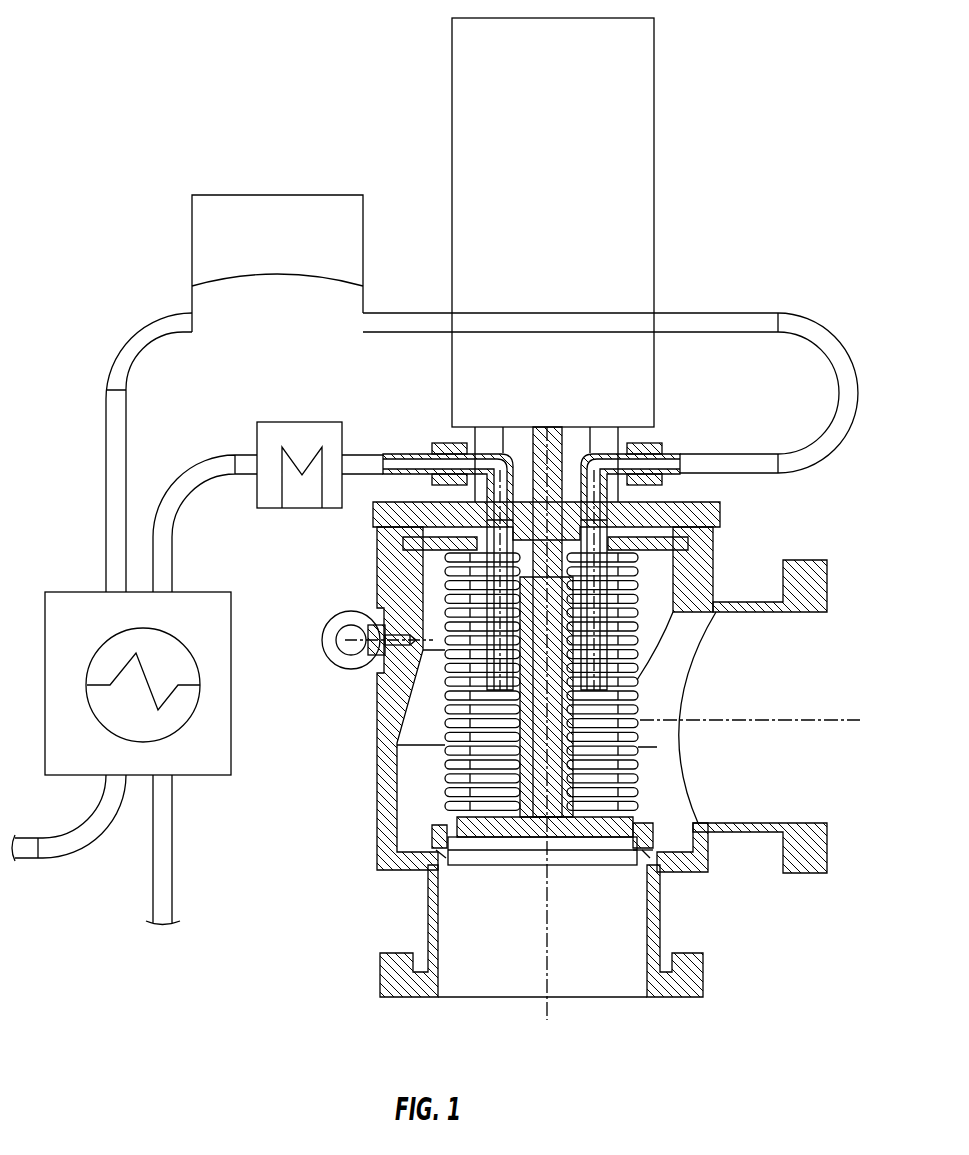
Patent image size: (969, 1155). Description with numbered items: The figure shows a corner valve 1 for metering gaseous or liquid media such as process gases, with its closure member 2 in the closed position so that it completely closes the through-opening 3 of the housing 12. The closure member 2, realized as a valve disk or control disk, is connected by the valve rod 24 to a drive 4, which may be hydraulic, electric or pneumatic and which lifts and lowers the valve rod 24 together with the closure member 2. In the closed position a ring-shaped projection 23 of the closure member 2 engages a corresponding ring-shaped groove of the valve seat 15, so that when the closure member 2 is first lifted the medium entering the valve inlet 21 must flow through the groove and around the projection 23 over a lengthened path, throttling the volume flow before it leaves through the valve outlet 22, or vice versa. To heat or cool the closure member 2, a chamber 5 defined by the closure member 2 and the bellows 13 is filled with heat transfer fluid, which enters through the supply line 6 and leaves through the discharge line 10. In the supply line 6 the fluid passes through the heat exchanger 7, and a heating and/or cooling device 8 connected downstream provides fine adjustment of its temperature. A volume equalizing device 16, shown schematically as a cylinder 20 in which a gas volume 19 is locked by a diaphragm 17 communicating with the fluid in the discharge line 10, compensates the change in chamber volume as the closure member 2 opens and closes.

The valve 1 is at (358, 862).
The closure member 2 is at (515, 832).
The through-opening 3 is at (532, 860).
The drive 4 is at (640, 199).
The chamber 5 is at (623, 690).
The supply line 6 is at (383, 443).
The heat exchanger 7 is at (200, 760).
The heating and/or cooling device 8 is at (331, 436).
The discharge line 10 is at (682, 318).
The housing 12 is at (652, 857).
The bellows 13 is at (635, 563).
The valve seat 15 is at (430, 858).
The volume equalizing device 16 is at (335, 218).
The diaphragm 17 is at (210, 285).
The gas volume 19 is at (265, 227).
The cylinder 20 is at (192, 208).
The valve inlet 21 is at (573, 973).
The valve outlet 22 is at (762, 642).
The projection 23 is at (435, 852).
The valve rod 24 is at (500, 672).